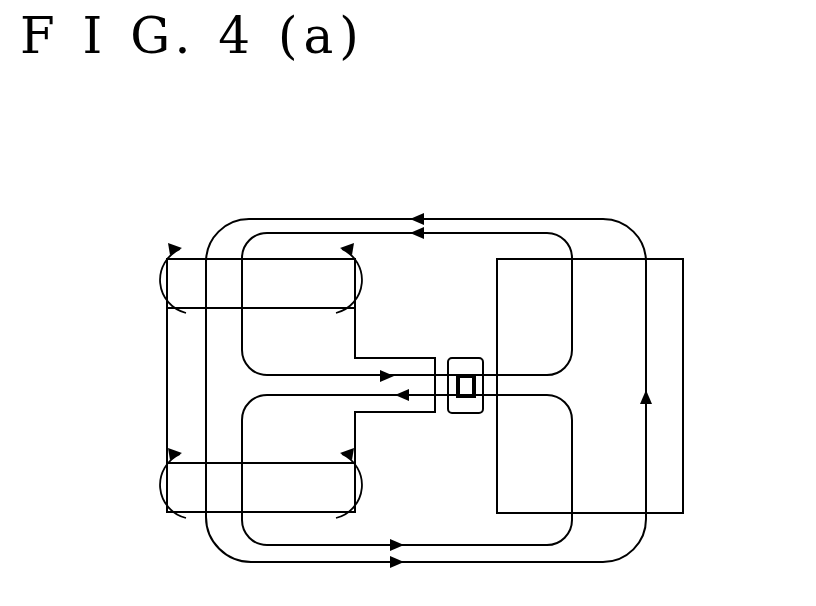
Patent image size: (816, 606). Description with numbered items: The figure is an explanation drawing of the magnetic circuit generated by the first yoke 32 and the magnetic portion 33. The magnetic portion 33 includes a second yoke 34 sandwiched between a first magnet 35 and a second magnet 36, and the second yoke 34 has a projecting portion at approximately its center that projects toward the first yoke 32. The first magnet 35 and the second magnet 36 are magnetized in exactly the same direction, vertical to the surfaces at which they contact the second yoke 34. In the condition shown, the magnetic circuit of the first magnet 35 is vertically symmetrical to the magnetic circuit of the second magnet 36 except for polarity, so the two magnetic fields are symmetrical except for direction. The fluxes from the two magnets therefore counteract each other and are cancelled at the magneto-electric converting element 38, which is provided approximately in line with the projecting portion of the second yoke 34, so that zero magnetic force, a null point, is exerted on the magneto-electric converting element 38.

The first yoke 32 is at (672, 337).
The magnetic portion 33 is at (275, 361).
The second yoke 34 is at (178, 380).
The first magnet 35 is at (223, 498).
The second magnet 36 is at (305, 268).
The magneto-electric converting element 38 is at (468, 357).